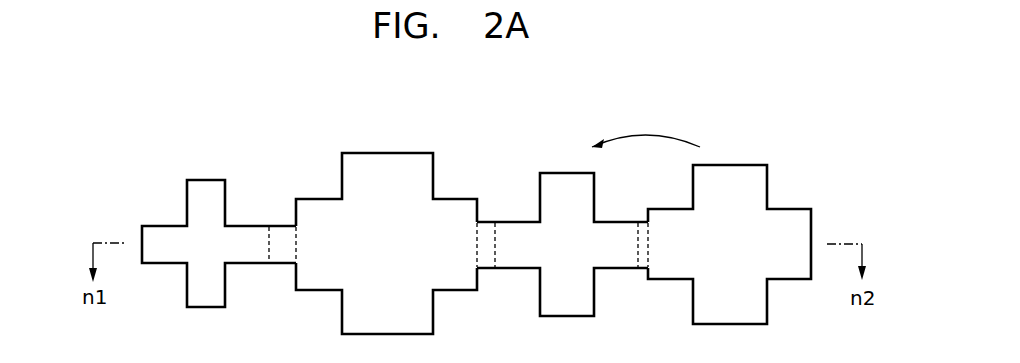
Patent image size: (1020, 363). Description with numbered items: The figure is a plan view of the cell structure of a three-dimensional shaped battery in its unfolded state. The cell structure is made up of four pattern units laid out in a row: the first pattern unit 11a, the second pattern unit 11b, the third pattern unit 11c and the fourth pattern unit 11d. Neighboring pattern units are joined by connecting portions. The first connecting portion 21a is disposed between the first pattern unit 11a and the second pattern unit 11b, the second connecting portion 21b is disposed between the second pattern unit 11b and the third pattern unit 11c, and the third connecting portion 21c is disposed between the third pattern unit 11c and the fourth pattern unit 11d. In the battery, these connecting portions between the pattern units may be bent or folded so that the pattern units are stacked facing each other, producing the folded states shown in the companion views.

The first pattern unit 11a is at (208, 179).
The second pattern unit 11b is at (388, 153).
The third pattern unit 11c is at (570, 173).
The fourth pattern unit 11d is at (727, 165).
The first connecting portion 21a is at (284, 253).
The second connecting portion 21b is at (485, 263).
The third connecting portion 21c is at (644, 263).